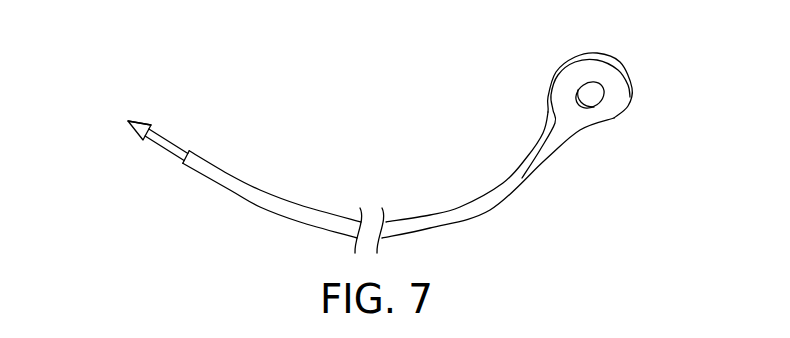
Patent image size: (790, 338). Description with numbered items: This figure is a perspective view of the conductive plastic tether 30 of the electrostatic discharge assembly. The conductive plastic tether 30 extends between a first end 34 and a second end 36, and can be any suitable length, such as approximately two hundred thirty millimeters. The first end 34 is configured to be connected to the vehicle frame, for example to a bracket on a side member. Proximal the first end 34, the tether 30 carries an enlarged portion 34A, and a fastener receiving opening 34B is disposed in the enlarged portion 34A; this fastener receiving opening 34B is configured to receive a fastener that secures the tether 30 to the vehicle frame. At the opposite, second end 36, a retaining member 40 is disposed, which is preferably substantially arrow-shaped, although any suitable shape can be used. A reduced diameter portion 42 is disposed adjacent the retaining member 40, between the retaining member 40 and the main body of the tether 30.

The conductive plastic tether 30 is at (248, 183).
The first end 34 is at (557, 100).
The enlarged portion 34A is at (565, 98).
The fastener receiving opening 34B is at (598, 106).
The second end 36 is at (130, 133).
The retaining member 40 is at (143, 118).
The reduced diameter portion 42 is at (163, 150).